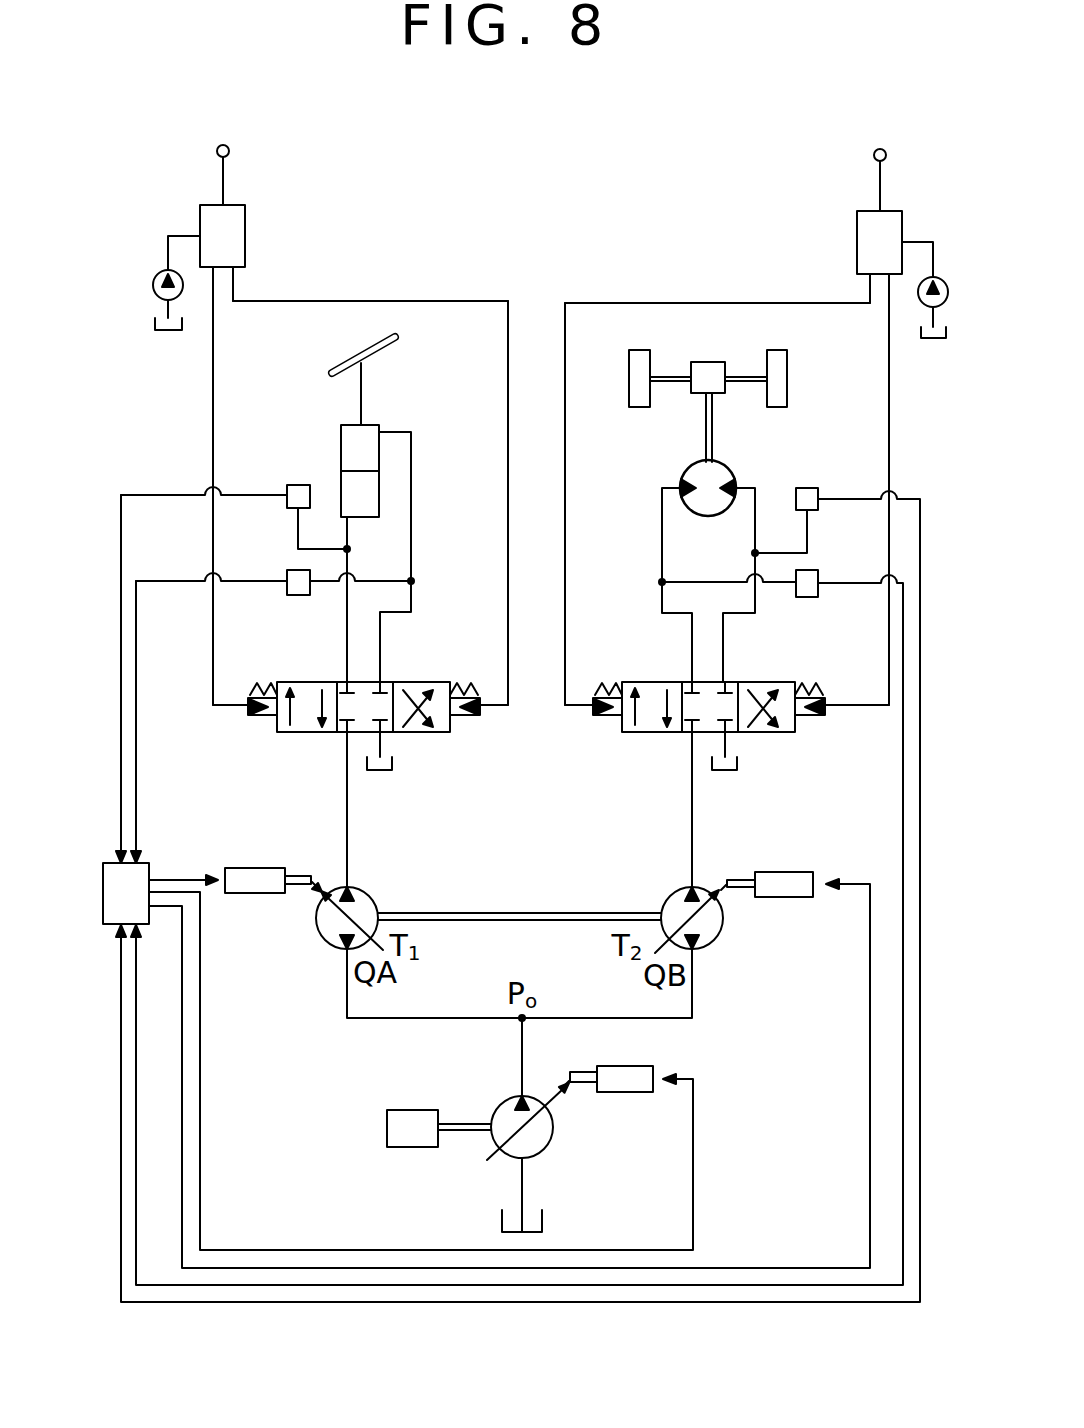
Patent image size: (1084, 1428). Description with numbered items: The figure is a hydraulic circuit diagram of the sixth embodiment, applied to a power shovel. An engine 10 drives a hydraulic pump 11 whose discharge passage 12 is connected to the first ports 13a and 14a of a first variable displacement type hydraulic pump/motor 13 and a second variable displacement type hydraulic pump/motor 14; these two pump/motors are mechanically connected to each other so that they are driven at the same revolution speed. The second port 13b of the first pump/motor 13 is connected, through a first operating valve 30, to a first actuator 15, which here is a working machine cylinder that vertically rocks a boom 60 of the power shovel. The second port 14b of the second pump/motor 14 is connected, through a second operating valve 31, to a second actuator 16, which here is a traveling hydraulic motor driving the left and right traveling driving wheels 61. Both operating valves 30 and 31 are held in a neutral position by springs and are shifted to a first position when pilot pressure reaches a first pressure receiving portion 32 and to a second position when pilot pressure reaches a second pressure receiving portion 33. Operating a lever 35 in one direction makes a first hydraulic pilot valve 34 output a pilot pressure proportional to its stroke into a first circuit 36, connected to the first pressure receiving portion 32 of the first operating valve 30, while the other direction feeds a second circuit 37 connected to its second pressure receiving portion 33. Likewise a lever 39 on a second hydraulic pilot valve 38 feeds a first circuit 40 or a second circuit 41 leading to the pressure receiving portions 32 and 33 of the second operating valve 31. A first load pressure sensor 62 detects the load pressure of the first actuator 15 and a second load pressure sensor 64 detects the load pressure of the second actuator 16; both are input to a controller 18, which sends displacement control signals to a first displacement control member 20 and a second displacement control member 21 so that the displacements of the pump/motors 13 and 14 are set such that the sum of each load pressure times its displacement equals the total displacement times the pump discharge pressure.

The engine 10 is at (397, 1110).
The hydraulic pump 11 is at (497, 1105).
The discharge passage 12 is at (520, 1052).
The first variable displacement type hydraulic pump/motor 13 is at (318, 918).
The first port of the first variable displacement type hydraulic pump/motor 13a is at (338, 951).
The second port of the first variable displacement type hydraulic pump/motor 13b is at (360, 889).
The second variable displacement type hydraulic pump/motor 14 is at (720, 918).
The first port of the second variable displacement type hydraulic pump/motor 14a is at (700, 951).
The second port of the second variable displacement type hydraulic pump/motor 14b is at (681, 889).
The first actuator 15 is at (379, 430).
The second actuator 16 is at (689, 469).
The controller 18 is at (149, 868).
The first displacement control member 20 is at (280, 868).
The second displacement control member 21 is at (800, 872).
The first operating valve 30 is at (440, 682).
The second operating valve 31 is at (800, 682).
The first pressure receiving portion 32 is at (248, 698).
The second pressure receiving portion 33 is at (478, 700).
The first hydraulic pilot valve 34 is at (245, 250).
The lever 35 is at (229, 152).
The first circuit 36 is at (212, 388).
The second circuit 37 is at (398, 301).
The second hydraulic pilot valve 38 is at (857, 262).
The lever 39 is at (874, 156).
The first circuit 40 is at (628, 303).
The second circuit 41 is at (889, 368).
The boom 60 is at (397, 341).
The traveling driving wheels 61 is at (629, 386).
The first load pressure sensor 62 is at (298, 485).
The second load pressure sensor 64 is at (807, 488).